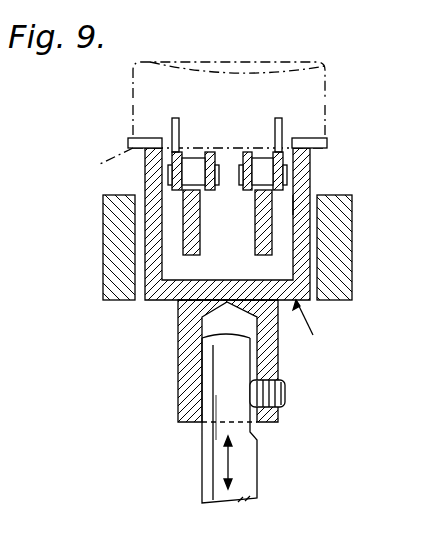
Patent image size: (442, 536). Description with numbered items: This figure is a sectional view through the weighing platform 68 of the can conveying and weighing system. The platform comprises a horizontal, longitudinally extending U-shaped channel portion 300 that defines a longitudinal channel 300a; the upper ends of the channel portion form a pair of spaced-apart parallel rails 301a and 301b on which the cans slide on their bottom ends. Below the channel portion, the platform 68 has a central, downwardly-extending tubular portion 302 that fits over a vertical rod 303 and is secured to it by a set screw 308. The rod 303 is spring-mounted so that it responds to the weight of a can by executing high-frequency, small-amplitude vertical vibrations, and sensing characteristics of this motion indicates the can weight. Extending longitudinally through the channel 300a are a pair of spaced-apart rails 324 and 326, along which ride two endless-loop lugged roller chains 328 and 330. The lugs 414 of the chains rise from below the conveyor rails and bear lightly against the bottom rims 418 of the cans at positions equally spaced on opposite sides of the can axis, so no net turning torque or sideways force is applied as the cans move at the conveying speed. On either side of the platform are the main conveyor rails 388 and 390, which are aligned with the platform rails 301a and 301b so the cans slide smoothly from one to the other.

The weighing platform 68 is at (314, 325).
The U-shaped channel portion 300 is at (157, 296).
The longitudinal channel 300a is at (290, 199).
The rail 301a is at (152, 146).
The rail 301b is at (304, 141).
The tubular portion 302 is at (178, 385).
The vertical rod 303 is at (202, 465).
The set screw 308 is at (286, 393).
The rail 324 is at (197, 250).
The rail 326 is at (254, 246).
The lugged roller chain 328 is at (193, 168).
The lugged roller chain 330 is at (262, 170).
The rail 388 is at (103, 208).
The rail 390 is at (352, 212).
The lugs 414 is at (175, 118).
The bottom rims 418 is at (92, 162).